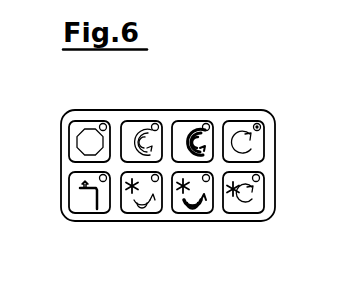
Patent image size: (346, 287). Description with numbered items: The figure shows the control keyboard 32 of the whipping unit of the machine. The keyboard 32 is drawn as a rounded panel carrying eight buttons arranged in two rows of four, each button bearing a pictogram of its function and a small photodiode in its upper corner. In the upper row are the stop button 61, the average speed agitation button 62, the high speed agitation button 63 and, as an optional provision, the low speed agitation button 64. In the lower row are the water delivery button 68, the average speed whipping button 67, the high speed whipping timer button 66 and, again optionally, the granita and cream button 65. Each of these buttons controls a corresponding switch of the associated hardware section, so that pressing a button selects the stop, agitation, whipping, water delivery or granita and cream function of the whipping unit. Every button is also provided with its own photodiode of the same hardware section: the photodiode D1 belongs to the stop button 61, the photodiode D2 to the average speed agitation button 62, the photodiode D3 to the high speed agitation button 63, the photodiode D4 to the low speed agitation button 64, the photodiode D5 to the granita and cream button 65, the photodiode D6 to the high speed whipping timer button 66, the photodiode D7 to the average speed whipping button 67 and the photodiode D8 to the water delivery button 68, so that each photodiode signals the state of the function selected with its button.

The keyboard 32 is at (175, 105).
The stop button 61 is at (82, 143).
The average speed agitation button 62 is at (127, 123).
The high speed agitation button 63 is at (185, 122).
The low speed agitation button 64 is at (240, 123).
The granita and cream button 65 is at (254, 215).
The high speed whipping timer button 66 is at (175, 212).
The average speed whipping button 67 is at (128, 210).
The water delivery button 68 is at (77, 198).
The photodiode D1 is at (105, 124).
The photodiode D2 is at (155, 124).
The photodiode D3 is at (207, 124).
The photodiode D4 is at (259, 124).
The photodiode D5 is at (260, 179).
The photodiode D6 is at (209, 210).
The photodiode D7 is at (160, 212).
The photodiode D8 is at (99, 176).